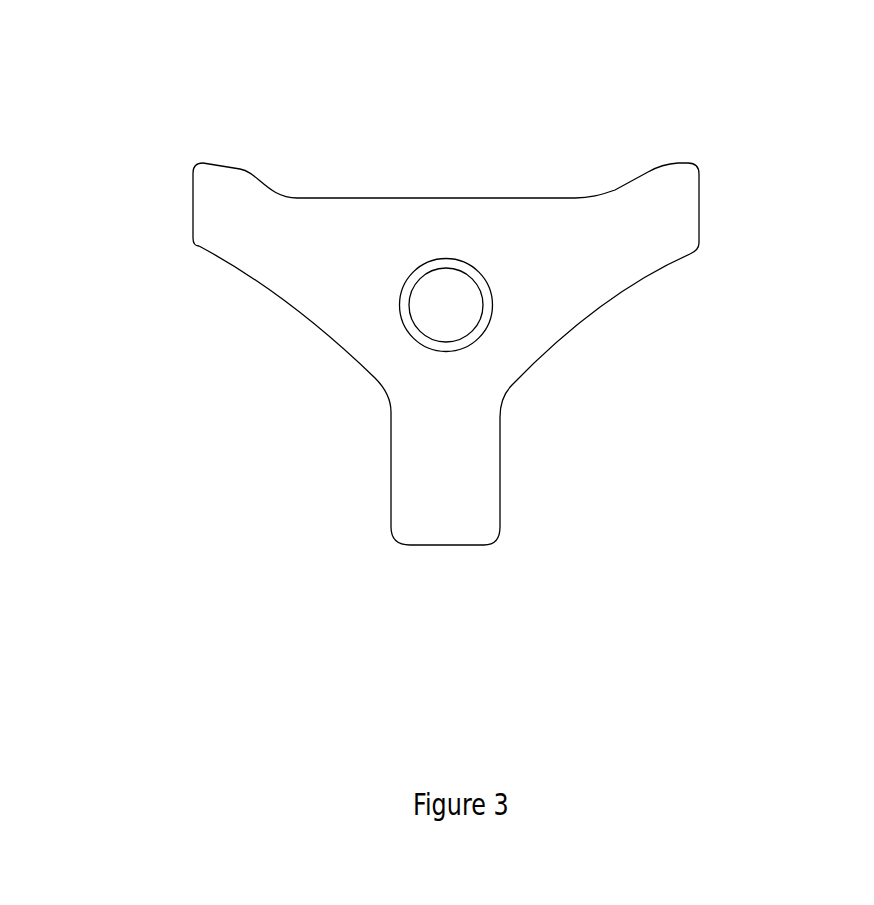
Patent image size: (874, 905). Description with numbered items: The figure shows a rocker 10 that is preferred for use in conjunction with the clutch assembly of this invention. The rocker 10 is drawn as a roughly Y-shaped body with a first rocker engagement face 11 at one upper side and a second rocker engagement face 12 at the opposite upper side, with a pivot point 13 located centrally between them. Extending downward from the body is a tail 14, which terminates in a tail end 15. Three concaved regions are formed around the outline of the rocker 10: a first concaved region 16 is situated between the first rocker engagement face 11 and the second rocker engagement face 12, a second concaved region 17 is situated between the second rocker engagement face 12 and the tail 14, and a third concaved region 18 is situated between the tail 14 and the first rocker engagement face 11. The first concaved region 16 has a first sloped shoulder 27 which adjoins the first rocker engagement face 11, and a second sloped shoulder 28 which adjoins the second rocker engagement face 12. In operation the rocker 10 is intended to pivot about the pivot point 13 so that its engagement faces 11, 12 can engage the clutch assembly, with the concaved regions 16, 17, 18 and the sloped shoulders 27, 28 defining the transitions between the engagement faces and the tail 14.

The rocker 10 is at (440, 357).
The first rocker engagement face 11 is at (193, 204).
The second rocker engagement face 12 is at (699, 210).
The pivot point 13 is at (448, 307).
The tail 14 is at (450, 497).
The tail end 15 is at (422, 545).
The first concaved region 16 is at (334, 197).
The second concaved region 17 is at (578, 327).
The third concaved region 18 is at (329, 340).
The first sloped shoulder 27 is at (253, 171).
The second sloped shoulder 28 is at (652, 169).